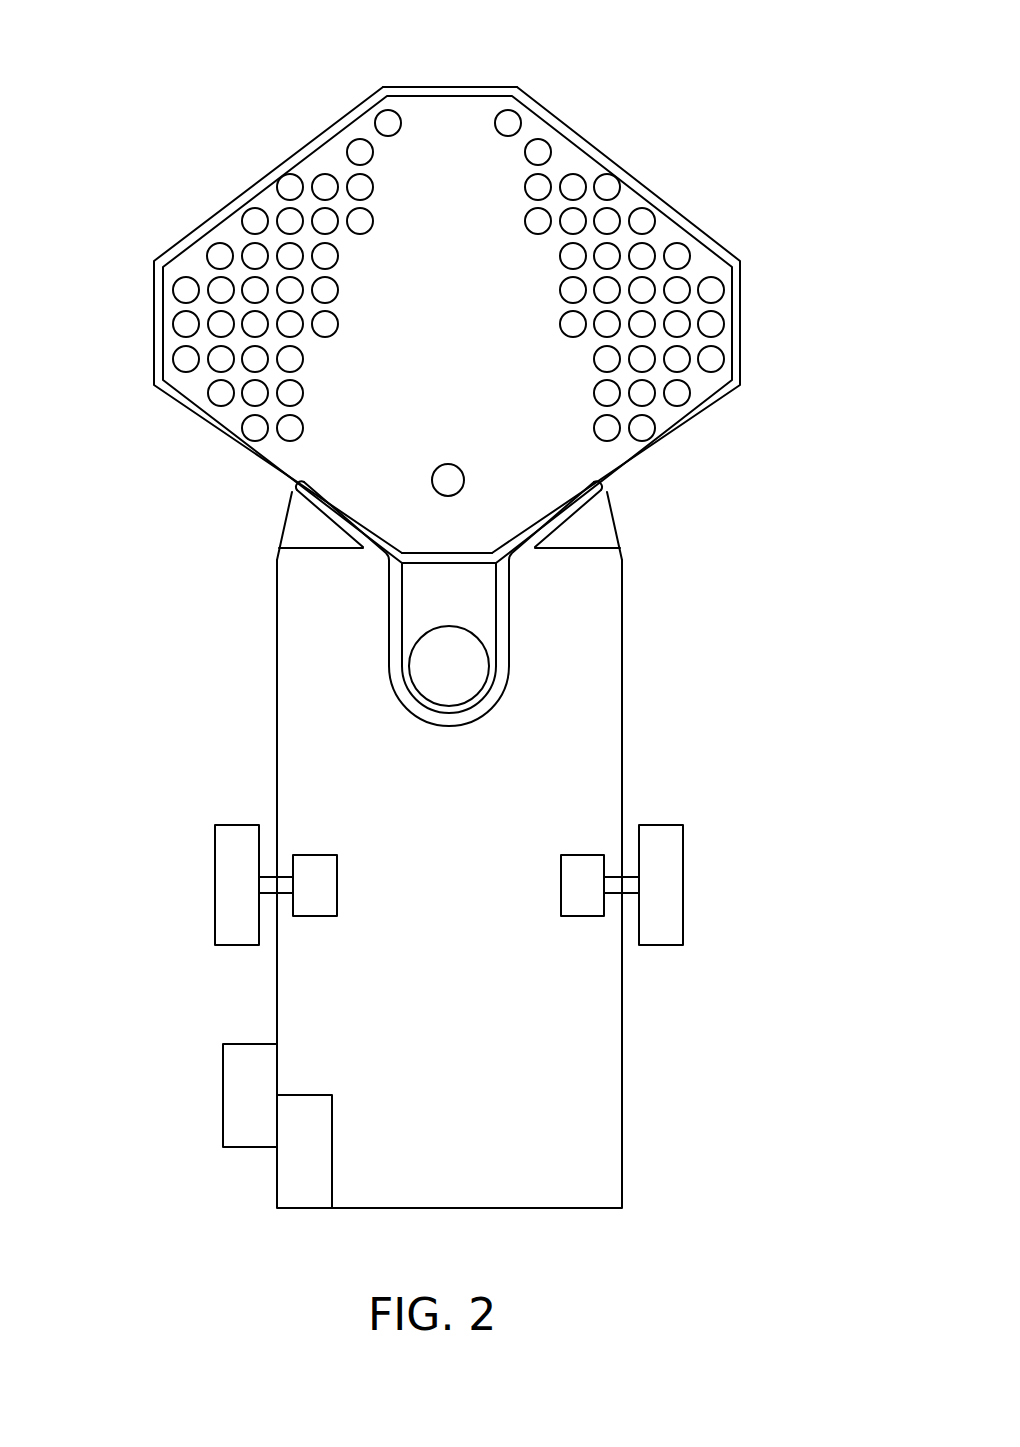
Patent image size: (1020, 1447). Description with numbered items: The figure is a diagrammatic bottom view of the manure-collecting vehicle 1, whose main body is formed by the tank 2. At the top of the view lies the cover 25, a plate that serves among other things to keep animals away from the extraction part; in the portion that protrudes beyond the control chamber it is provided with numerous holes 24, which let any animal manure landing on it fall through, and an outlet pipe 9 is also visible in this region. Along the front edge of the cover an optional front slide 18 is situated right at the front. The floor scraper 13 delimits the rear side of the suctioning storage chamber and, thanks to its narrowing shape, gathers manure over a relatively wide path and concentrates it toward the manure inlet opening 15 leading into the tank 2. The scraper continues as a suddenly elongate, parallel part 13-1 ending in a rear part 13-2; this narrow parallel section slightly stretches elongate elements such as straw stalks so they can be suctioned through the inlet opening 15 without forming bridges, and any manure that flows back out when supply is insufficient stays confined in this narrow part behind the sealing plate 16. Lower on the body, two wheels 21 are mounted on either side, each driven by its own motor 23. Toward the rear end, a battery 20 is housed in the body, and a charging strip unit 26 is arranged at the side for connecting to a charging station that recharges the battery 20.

The vehicle 1 is at (436, 686).
The tank 2 is at (622, 1139).
The outlet pipe 9 is at (448, 480).
The floor scraper 13 is at (457, 285).
The elongate part of floor scraper 13-1 is at (453, 627).
The rear part of floor scraper 13-2 is at (480, 699).
The manure inlet opening 15 is at (454, 667).
The sealing plate 16 is at (448, 560).
The front slide 18 is at (453, 90).
The battery 20 is at (297, 1180).
The wheel 21 is at (233, 894).
The motor 23 is at (313, 872).
The holes 24 is at (677, 257).
The cover 25 is at (270, 174).
The charging strip unit 26 is at (248, 1097).